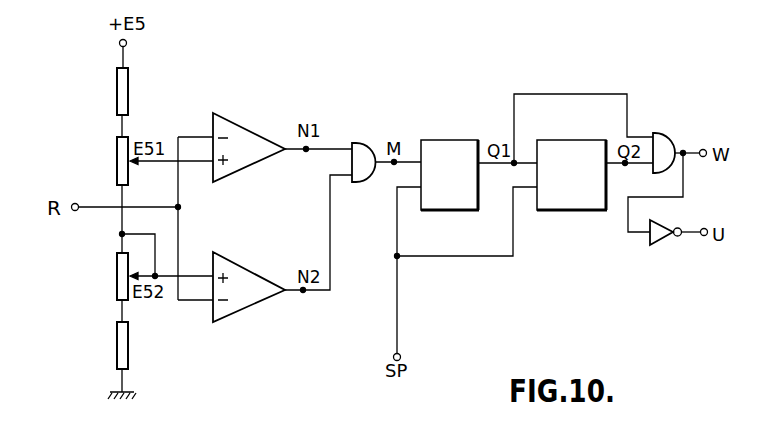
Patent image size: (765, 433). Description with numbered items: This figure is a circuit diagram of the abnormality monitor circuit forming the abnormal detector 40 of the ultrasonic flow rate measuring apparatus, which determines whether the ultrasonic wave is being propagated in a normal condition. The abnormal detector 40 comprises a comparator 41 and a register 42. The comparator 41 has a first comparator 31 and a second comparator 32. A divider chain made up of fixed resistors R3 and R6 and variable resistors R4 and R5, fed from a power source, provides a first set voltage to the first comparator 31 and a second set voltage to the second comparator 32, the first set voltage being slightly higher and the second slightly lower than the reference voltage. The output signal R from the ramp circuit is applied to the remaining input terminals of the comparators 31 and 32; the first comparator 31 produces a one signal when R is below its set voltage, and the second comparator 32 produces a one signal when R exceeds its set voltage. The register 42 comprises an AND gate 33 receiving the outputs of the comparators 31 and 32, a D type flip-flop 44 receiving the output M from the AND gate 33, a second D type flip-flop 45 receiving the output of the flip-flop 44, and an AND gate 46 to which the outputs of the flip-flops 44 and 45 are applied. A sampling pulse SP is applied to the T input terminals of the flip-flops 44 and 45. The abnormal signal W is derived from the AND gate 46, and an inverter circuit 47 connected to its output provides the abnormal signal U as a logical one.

The first comparator 31 is at (250, 126).
The second comparator 32 is at (246, 267).
The AND gate 33 is at (366, 141).
The abnormal detector 40 is at (429, 61).
The comparator 41 is at (272, 387).
The register 42 is at (567, 329).
The D type flip-flop 44 is at (461, 211).
The D type flip-flop 45 is at (577, 211).
The AND gate 46 is at (663, 133).
The inverter circuit 47 is at (663, 247).
The fixed resistor R3 is at (117, 93).
The variable resistor R4 is at (117, 160).
The variable resistor R5 is at (116, 274).
The fixed resistor R6 is at (117, 344).